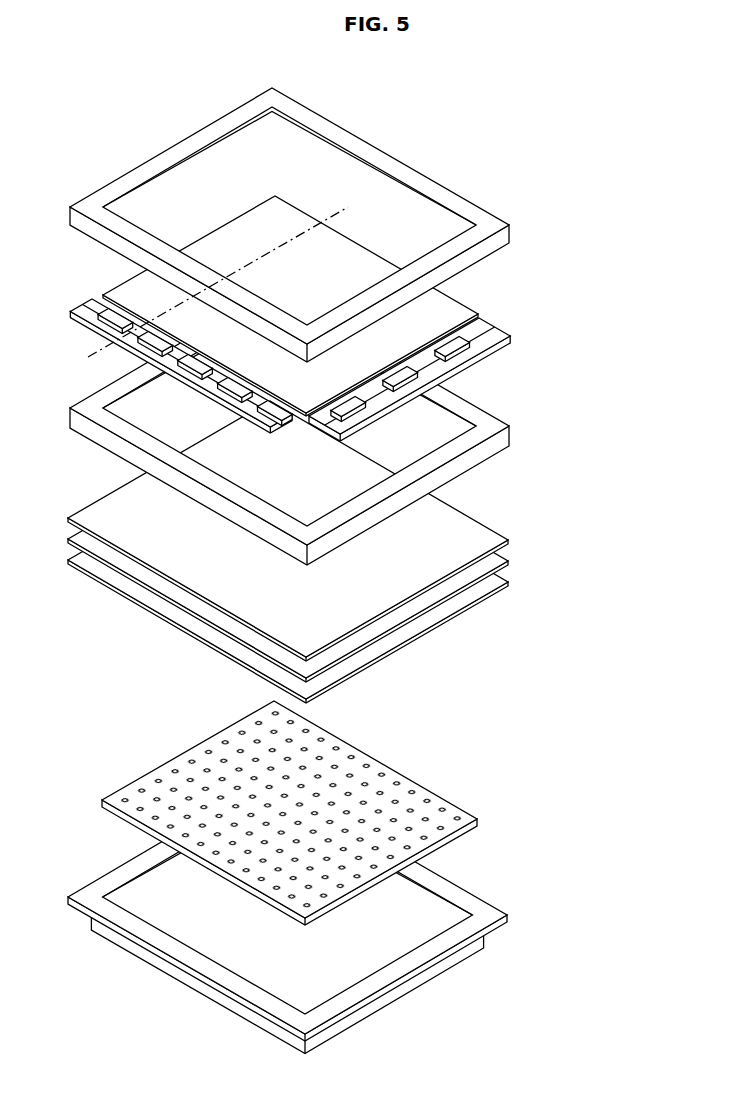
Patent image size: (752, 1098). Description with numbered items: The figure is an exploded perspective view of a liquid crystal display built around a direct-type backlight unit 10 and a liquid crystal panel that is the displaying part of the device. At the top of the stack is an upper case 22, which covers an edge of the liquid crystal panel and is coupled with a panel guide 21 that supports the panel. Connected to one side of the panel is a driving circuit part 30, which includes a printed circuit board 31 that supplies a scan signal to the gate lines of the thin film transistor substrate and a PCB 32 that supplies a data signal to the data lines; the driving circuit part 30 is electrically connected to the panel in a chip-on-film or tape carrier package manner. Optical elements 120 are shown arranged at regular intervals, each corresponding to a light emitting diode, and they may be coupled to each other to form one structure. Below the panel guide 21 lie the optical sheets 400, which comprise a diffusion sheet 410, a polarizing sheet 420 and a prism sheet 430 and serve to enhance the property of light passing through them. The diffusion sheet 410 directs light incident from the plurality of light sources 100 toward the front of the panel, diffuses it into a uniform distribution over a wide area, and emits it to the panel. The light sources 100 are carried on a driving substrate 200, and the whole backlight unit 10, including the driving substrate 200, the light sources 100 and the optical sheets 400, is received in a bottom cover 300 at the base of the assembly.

The backlight unit 10 is at (378, 571).
The upper case 22 is at (516, 233).
The optical elements 120 is at (450, 304).
The driving circuit part 30 is at (325, 357).
The printed circuit board 31 is at (500, 320).
The PCB 32 is at (100, 311).
The panel guide 21 is at (511, 434).
The optical sheets 400 is at (378, 552).
The diffusion sheet 410 is at (518, 578).
The polarizing sheet 420 is at (518, 556).
The prism sheet 430 is at (518, 534).
The light sources 100 is at (251, 813).
The driving substrate 200 is at (160, 770).
The bottom cover 300 is at (489, 880).